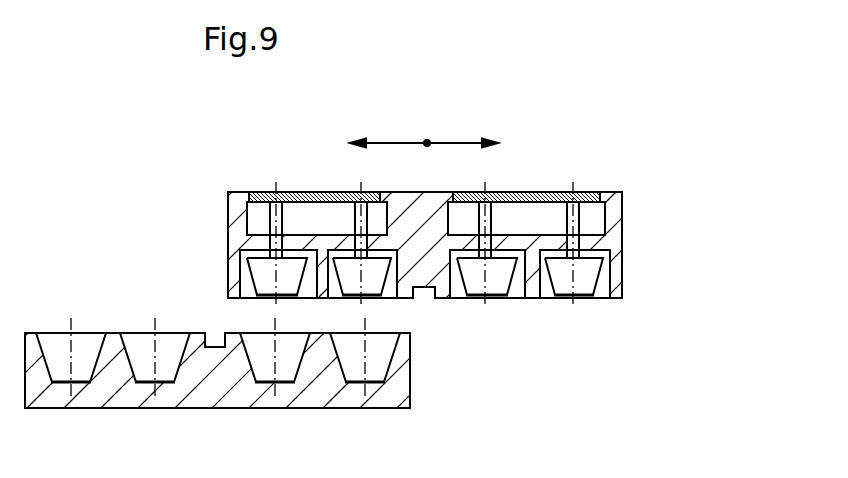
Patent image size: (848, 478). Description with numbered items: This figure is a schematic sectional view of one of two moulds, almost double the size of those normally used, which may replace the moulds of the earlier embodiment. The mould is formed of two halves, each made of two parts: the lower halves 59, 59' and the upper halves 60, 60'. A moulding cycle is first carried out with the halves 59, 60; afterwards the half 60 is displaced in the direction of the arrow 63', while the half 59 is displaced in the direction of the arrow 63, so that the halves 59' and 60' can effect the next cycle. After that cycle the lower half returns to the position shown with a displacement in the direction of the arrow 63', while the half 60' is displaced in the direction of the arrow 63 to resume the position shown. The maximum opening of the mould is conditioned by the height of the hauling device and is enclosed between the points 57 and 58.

The opening limit 57 is at (217, 340).
The opening limit 58 is at (423, 291).
The mould half 59 is at (246, 386).
The mould half 59' is at (236, 389).
The mould half 60 is at (419, 225).
The mould half 60' is at (419, 233).
The arrow 63 is at (461, 119).
The arrow 63' is at (388, 119).